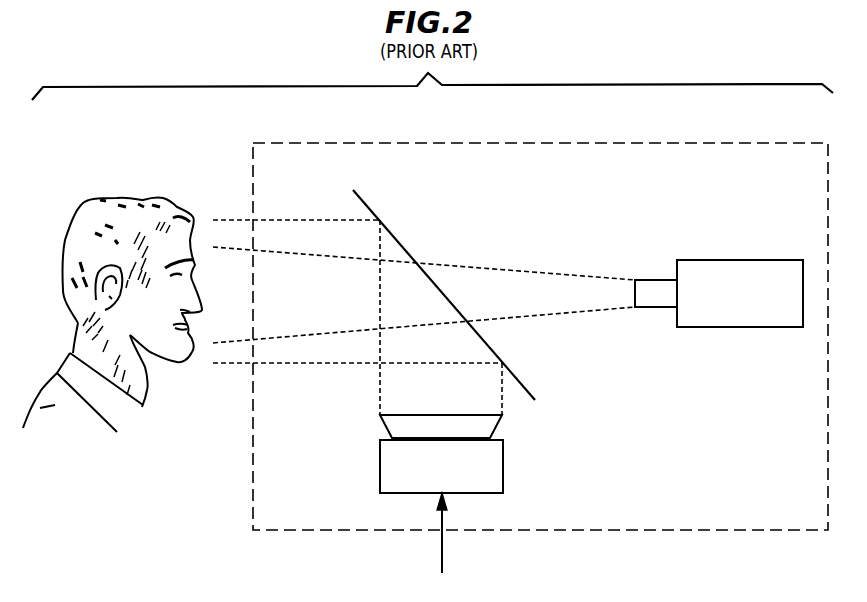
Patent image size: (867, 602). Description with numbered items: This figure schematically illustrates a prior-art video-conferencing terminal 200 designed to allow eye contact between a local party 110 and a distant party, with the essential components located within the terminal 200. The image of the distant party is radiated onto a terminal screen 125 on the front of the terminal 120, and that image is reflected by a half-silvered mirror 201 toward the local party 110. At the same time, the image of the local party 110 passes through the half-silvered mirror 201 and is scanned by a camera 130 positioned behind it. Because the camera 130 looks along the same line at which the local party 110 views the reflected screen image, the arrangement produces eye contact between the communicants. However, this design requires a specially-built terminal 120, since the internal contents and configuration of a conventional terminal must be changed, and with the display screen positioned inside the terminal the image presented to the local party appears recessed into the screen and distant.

The local party 110 is at (95, 190).
The terminal 120 is at (503, 468).
The terminal screen 125 is at (387, 430).
The camera 130 is at (767, 260).
The video-conferencing terminal 200 is at (605, 143).
The half-silvered mirror 201 is at (373, 210).